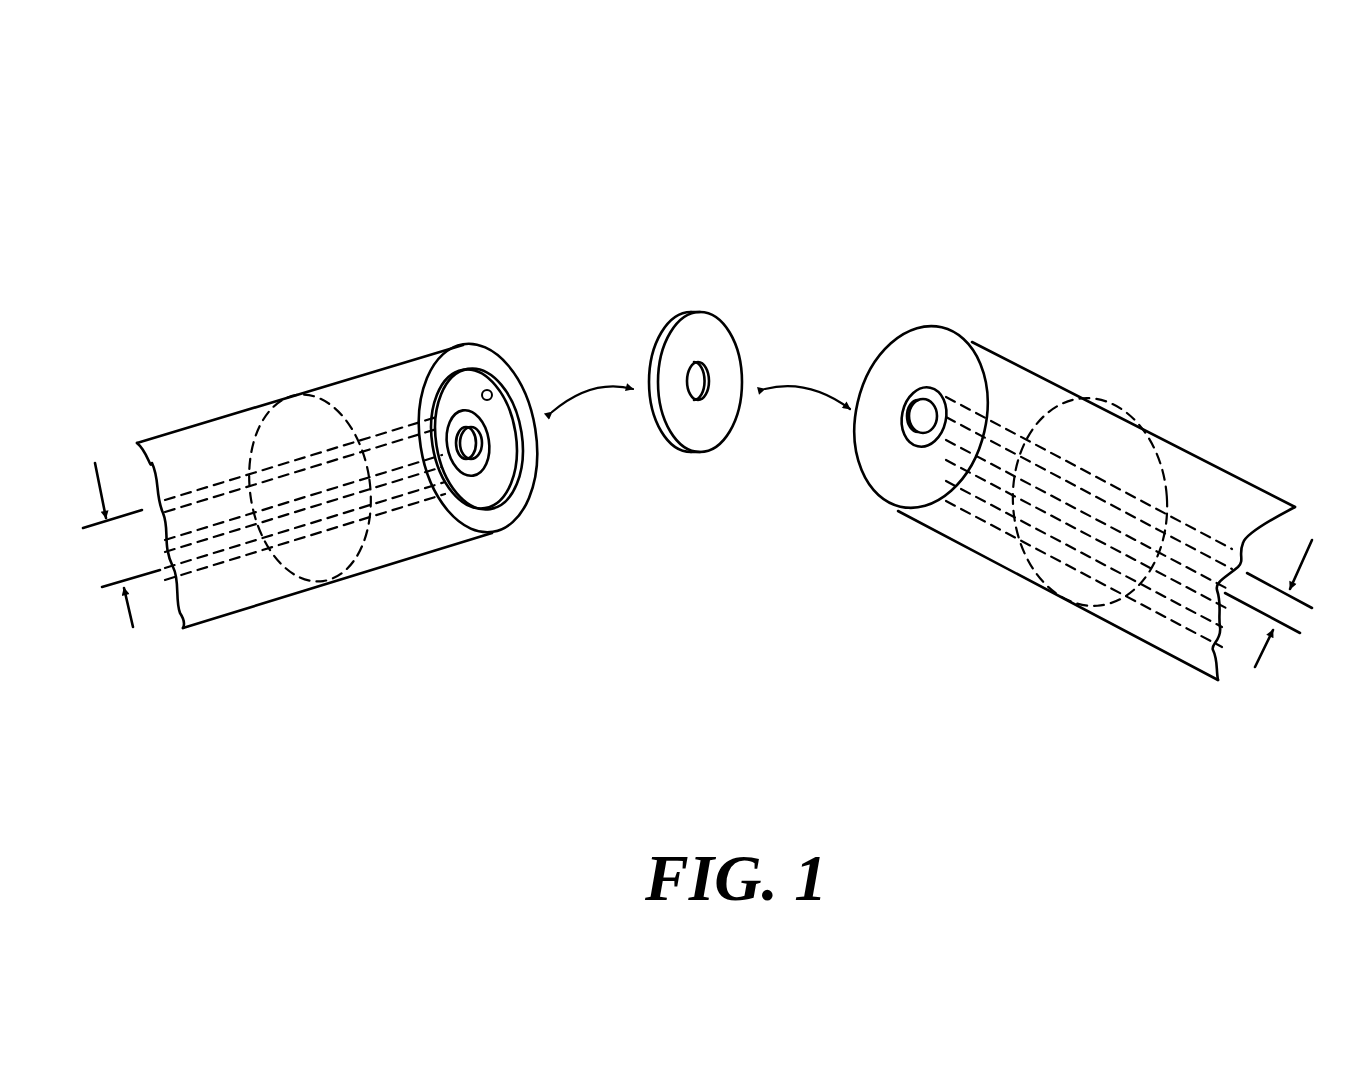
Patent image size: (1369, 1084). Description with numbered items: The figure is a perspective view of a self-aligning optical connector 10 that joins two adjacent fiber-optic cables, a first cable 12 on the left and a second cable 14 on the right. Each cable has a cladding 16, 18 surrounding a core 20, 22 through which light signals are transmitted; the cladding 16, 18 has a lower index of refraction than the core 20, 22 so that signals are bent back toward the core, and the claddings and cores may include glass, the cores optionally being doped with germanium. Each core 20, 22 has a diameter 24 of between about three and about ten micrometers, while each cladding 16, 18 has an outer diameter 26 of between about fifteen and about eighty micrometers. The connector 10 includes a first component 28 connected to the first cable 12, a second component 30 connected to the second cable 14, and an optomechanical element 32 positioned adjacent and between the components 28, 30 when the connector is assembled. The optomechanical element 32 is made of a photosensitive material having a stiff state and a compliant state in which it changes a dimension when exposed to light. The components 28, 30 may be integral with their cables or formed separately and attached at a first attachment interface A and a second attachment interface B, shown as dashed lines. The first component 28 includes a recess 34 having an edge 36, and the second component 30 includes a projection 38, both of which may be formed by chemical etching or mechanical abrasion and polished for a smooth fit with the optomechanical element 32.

The self-aligning optical connector 10 is at (995, 207).
The first cable 12 is at (240, 475).
The second cable 14 is at (1197, 457).
The cladding 16 is at (214, 428).
The cladding 18 is at (1082, 398).
The core 20 is at (355, 432).
The core 22 is at (1009, 483).
The core diameter 24 is at (1255, 667).
The cladding outer diameter 26 is at (133, 627).
The first component 28 is at (318, 388).
The second component 30 is at (1021, 365).
The optomechanical element 32 is at (693, 311).
The recess 34 is at (503, 381).
The edge 36 is at (522, 472).
The projection 38 is at (922, 392).
The first attachment interface A is at (273, 553).
The second attachment interface B is at (1140, 600).